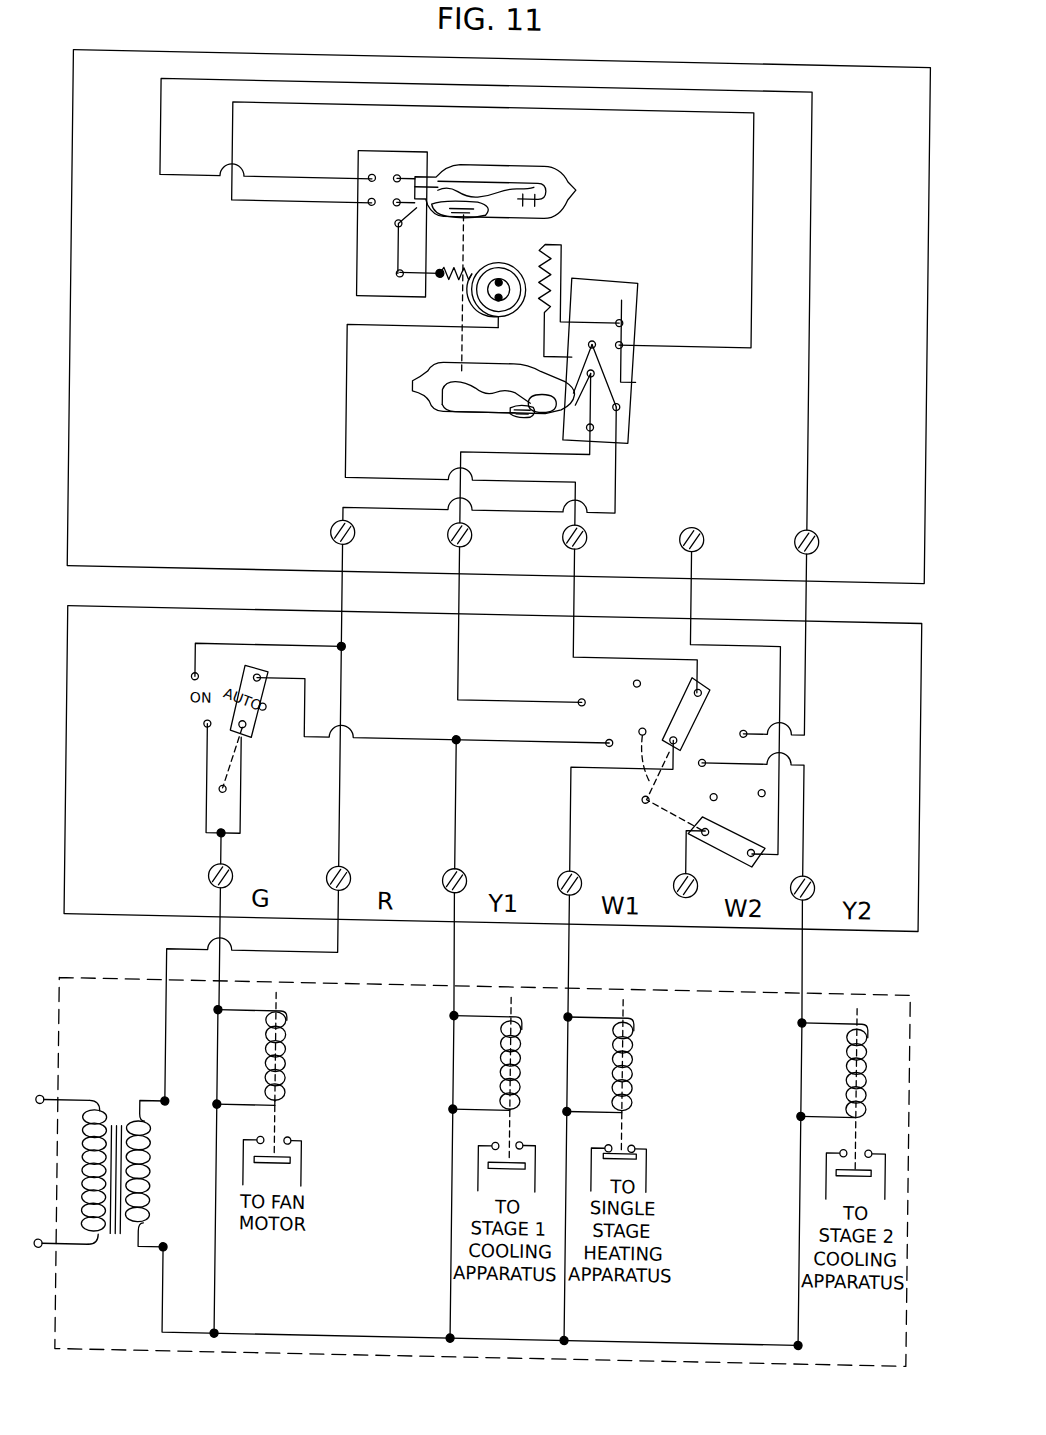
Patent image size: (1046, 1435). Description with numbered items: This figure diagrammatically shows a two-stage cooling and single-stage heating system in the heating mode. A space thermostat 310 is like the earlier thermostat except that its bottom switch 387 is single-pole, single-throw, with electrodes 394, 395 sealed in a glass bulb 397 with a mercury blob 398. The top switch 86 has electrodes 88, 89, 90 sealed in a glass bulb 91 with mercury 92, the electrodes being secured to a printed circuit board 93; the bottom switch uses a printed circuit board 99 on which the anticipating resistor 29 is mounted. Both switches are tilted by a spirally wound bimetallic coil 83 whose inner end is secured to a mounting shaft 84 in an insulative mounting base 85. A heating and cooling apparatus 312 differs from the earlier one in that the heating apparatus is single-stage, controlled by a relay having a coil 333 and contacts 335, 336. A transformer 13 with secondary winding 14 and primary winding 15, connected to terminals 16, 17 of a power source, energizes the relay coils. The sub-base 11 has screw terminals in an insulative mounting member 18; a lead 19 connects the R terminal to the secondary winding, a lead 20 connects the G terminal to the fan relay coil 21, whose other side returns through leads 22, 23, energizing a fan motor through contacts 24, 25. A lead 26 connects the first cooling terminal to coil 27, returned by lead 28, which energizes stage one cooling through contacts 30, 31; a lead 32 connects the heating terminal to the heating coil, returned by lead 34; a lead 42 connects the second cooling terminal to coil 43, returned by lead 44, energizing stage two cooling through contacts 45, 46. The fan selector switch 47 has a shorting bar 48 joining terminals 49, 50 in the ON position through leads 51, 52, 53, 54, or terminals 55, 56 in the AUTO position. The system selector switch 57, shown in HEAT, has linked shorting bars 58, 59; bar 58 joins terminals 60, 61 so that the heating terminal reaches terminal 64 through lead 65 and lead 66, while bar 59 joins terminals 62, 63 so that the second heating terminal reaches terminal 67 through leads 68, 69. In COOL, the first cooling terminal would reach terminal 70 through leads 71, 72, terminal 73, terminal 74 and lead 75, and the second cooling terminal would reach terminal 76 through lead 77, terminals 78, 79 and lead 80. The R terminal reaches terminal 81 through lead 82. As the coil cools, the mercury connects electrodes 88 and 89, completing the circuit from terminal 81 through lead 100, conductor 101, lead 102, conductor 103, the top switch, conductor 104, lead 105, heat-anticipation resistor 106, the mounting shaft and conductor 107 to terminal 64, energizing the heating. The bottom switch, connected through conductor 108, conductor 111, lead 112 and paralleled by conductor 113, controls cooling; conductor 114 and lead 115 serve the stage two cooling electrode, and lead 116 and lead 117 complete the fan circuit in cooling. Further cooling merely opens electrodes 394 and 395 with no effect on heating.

The sub-base 11 is at (870, 600).
The voltage step-down transformer 13 is at (112, 1136).
The secondary winding 14 is at (161, 1177).
The primary winding 15 is at (94, 1178).
The terminal 16 is at (50, 1092).
The terminal 17 is at (50, 1242).
The insulative mounting member 18 is at (915, 831).
The lead 19 is at (351, 921).
The lead 20 is at (240, 925).
The operating coil 21 is at (302, 1006).
The lead 22 is at (229, 1278).
The lead 23 is at (175, 1277).
The relay contact 24 is at (271, 1127).
The relay contact 25 is at (300, 1127).
The lead 26 is at (467, 925).
The operating coil 27 is at (524, 1006).
The lead 28 is at (464, 1276).
The anticipating resistor 29 is at (551, 256).
The relay contact 30 is at (506, 1127).
The relay contact 31 is at (532, 1126).
The lead 32 is at (582, 923).
The lead 34 is at (579, 1276).
The lead 42 is at (812, 923).
The operating coil 43 is at (874, 1007).
The lead 44 is at (814, 1275).
The relay contact 45 is at (854, 1128).
The relay contact 46 is at (880, 1127).
The fan selector switch 47 is at (191, 649).
The shorting bar 48 is at (274, 706).
The terminal 49 is at (212, 719).
The terminal 50 is at (198, 672).
The lead 51 is at (355, 788).
The lead 52 is at (213, 631).
The lead 53 is at (216, 766).
The lead 54 is at (242, 840).
The terminal 55 is at (259, 730).
The terminal 56 is at (270, 662).
The system selector switch 57 is at (839, 707).
The shorting bar 58 is at (724, 697).
The shorting bar 59 is at (758, 819).
The terminal 60 is at (677, 721).
The terminal 61 is at (720, 668).
The terminal 62 is at (730, 805).
The terminal 63 is at (750, 847).
The terminal 64 is at (597, 533).
The lead 65 is at (578, 838).
The lead 66 is at (582, 623).
The terminal 67 is at (712, 533).
The lead 68 is at (698, 834).
The lead 69 is at (698, 626).
The terminal 70 is at (482, 533).
The lead 71 is at (470, 813).
The lead 72 is at (506, 732).
The terminal 73 is at (617, 732).
The terminal 74 is at (591, 686).
The lead 75 is at (466, 623).
The terminal 76 is at (827, 535).
The lead 77 is at (815, 783).
The terminal 78 is at (691, 777).
The terminal 79 is at (794, 726).
The lead 80 is at (813, 626).
The terminal 81 is at (357, 536).
The lead 82 is at (348, 639).
The bimetallic coil 83 is at (517, 309).
The mounting shaft 84 is at (514, 276).
The insulative mounting base 85 is at (714, 60).
The top switch 86 is at (592, 172).
The electrode 88 is at (431, 209).
The electrode 89 is at (452, 155).
The electrode 90 is at (468, 166).
The glass bulb 91 is at (503, 156).
The mercury 92 is at (484, 295).
The printed circuit board 93 is at (362, 155).
The printed circuit board 99 is at (604, 267).
The lead 100 is at (621, 454).
The conductor 101 is at (638, 365).
The lead 102 is at (729, 335).
The conductor 103 is at (388, 197).
The conductor 104 is at (400, 239).
The lead 105 is at (418, 271).
The resistor 106 is at (453, 277).
The conductor 107 is at (351, 390).
The conductor 108 is at (632, 405).
The conductor 111 is at (574, 396).
The lead 112 is at (468, 478).
The conductor 113 is at (629, 320).
The conductor 114 is at (384, 154).
The lead 115 is at (159, 105).
The lead 116 is at (388, 730).
The lead 117 is at (254, 785).
The space thermostat 310 is at (806, 46).
The heating and cooling apparatus 312 is at (867, 964).
The coil 333 is at (642, 1005).
The heating relay contact 335 is at (619, 1128).
The contacts 336 is at (644, 1127).
The bottom switch 387 is at (427, 391).
The electrode 394 is at (536, 404).
The electrode 395 is at (463, 403).
The glass bulb 397 is at (427, 371).
The mercury blob 398 is at (532, 361).